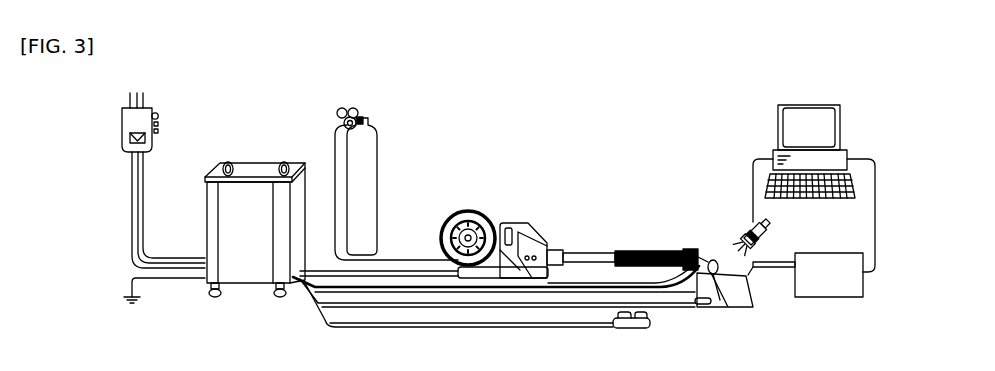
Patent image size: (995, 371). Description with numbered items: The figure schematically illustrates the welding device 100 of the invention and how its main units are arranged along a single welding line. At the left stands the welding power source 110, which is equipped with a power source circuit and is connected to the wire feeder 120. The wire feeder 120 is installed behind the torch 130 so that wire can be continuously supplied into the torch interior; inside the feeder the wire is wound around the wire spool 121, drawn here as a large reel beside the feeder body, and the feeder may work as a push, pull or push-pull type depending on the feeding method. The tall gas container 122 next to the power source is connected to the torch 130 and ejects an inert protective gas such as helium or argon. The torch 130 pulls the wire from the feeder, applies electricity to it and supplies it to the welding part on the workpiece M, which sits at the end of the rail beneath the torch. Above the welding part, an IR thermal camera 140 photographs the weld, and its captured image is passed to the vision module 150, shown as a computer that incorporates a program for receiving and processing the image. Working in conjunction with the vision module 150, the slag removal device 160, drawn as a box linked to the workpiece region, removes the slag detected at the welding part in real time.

The welding device 100 is at (241, 93).
The welding power source 110 is at (257, 170).
The wire feeder 120 is at (502, 220).
The wire spool 121 is at (462, 212).
The gas container 122 is at (370, 158).
The torch 130 is at (667, 248).
The IR thermal camera 140 is at (750, 225).
The vision module 150 is at (785, 128).
The slag removal device 160 is at (838, 292).
The base material (workpiece) M is at (742, 294).